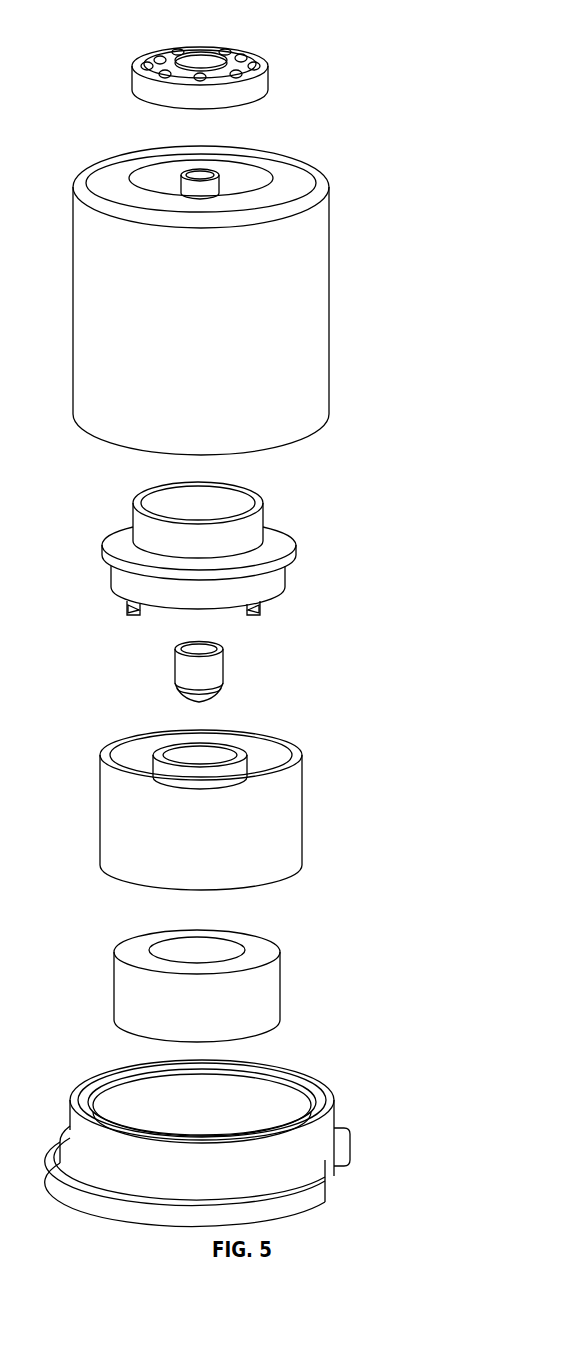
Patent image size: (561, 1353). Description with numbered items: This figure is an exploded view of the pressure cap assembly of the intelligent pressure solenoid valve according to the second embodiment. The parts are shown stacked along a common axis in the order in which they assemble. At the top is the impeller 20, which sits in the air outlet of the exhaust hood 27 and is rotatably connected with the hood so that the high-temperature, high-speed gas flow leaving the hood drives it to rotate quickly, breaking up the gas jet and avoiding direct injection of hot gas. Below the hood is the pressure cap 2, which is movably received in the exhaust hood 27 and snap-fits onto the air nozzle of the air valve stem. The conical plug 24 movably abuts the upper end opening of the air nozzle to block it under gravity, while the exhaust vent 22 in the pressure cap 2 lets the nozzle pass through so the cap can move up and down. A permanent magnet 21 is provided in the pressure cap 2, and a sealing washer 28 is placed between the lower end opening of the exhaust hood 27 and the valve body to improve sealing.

The impeller 20 is at (245, 90).
The exhaust hood 27 is at (262, 272).
The pressure cap 2 is at (298, 597).
The plug 24 is at (205, 673).
The exhaust vent 22 is at (205, 757).
The permanent magnet 21 is at (252, 1004).
The sealing washer 28 is at (315, 1135).